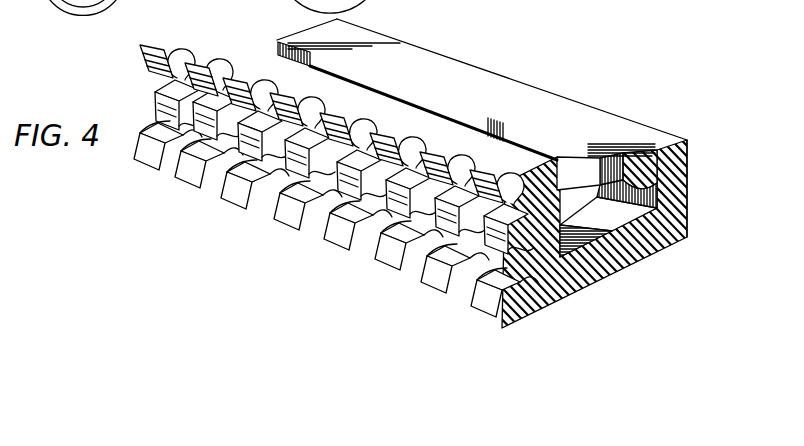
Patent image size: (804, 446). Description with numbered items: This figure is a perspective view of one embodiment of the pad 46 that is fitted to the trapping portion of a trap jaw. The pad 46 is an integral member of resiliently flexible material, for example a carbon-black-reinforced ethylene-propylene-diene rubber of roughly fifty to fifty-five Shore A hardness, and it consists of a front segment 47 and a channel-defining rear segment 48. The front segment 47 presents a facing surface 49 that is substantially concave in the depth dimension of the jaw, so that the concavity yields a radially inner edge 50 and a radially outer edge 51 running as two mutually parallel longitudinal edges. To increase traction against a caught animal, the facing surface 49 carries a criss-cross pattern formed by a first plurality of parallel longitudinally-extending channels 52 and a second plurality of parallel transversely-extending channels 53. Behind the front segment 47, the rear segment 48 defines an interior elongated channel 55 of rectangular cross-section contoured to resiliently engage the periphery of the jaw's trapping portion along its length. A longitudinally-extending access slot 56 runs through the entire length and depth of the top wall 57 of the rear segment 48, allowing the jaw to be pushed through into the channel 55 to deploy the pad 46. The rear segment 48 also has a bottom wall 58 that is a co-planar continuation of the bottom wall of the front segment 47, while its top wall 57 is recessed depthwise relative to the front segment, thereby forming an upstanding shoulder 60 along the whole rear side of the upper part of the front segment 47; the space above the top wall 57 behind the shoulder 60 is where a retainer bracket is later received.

The pad 46 is at (113, 62).
The front segment 47 is at (177, 47).
The channel-defining rear segment 48 is at (443, 68).
The facing surface 49 is at (193, 178).
The radially inner edge 50 is at (283, 223).
The radially outer edge 51 is at (202, 72).
The longitudinally-extending channels 52 is at (407, 238).
The transversely-extending channels 53 is at (470, 288).
The channel 55 is at (627, 222).
The access slot 56 is at (478, 115).
The top wall 57 is at (568, 108).
The bottom wall 58 is at (575, 285).
The shoulder 60 is at (558, 172).